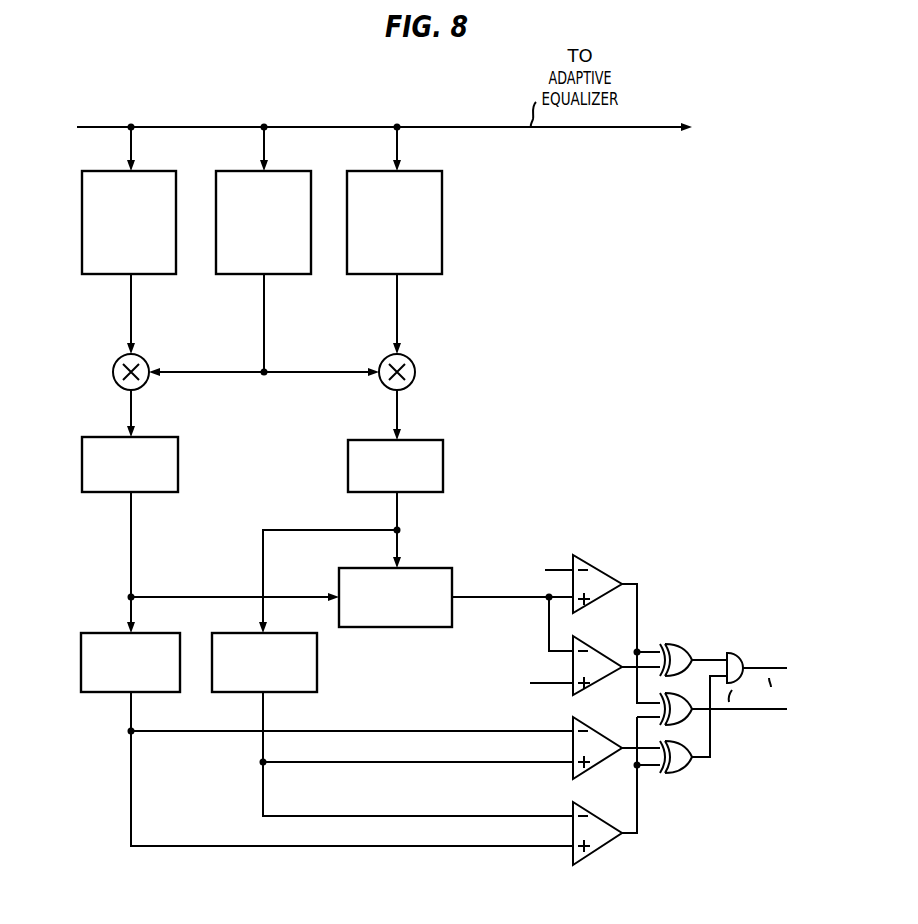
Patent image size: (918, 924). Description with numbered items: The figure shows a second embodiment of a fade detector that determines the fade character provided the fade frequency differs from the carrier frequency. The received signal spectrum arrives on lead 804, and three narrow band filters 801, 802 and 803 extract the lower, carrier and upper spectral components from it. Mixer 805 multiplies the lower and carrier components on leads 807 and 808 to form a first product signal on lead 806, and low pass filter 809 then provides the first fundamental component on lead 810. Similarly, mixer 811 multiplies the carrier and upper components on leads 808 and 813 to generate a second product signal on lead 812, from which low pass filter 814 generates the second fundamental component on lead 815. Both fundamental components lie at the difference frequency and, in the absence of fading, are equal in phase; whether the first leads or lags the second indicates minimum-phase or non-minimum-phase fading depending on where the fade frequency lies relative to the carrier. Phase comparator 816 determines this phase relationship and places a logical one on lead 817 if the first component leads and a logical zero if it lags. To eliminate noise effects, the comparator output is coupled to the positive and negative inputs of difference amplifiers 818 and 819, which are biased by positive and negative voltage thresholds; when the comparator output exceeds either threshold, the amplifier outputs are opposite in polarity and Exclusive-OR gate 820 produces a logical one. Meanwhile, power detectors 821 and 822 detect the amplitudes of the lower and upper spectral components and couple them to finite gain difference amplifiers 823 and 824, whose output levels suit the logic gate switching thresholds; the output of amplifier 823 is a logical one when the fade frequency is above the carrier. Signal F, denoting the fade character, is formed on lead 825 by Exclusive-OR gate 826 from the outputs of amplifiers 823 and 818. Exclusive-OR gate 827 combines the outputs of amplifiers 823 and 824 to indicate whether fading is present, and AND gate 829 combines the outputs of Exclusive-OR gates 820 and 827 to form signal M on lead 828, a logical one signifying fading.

The narrow band filter 801 is at (99, 170).
The narrow band filter 802 is at (244, 170).
The narrow band filter 803 is at (383, 170).
The lead 804 is at (203, 127).
The mixer 805 is at (113, 372).
The lead 806 is at (131, 412).
The lead 807 is at (131, 312).
The lead 808 is at (264, 312).
The low pass filter 809 is at (178, 452).
The lead 810 is at (131, 535).
The mixer 811 is at (415, 372).
The lead 812 is at (397, 412).
The lead 813 is at (397, 312).
The low pass filter 814 is at (348, 462).
The lead 815 is at (397, 510).
The phase comparator 816 is at (408, 627).
The lead 817 is at (491, 597).
The difference amplifier 818 is at (592, 567).
The difference amplifier 819 is at (592, 651).
The Exclusive-OR gate 820 is at (669, 645).
The power detector 821 is at (93, 632).
The power detector 822 is at (317, 668).
The difference amplifier 823 is at (592, 819).
The difference amplifier 824 is at (592, 727).
The lead 825 is at (775, 710).
The Exclusive-OR gate 826 is at (710, 734).
The Exclusive-OR gate 827 is at (684, 769).
The lead 828 is at (776, 668).
The AND gate 829 is at (742, 654).